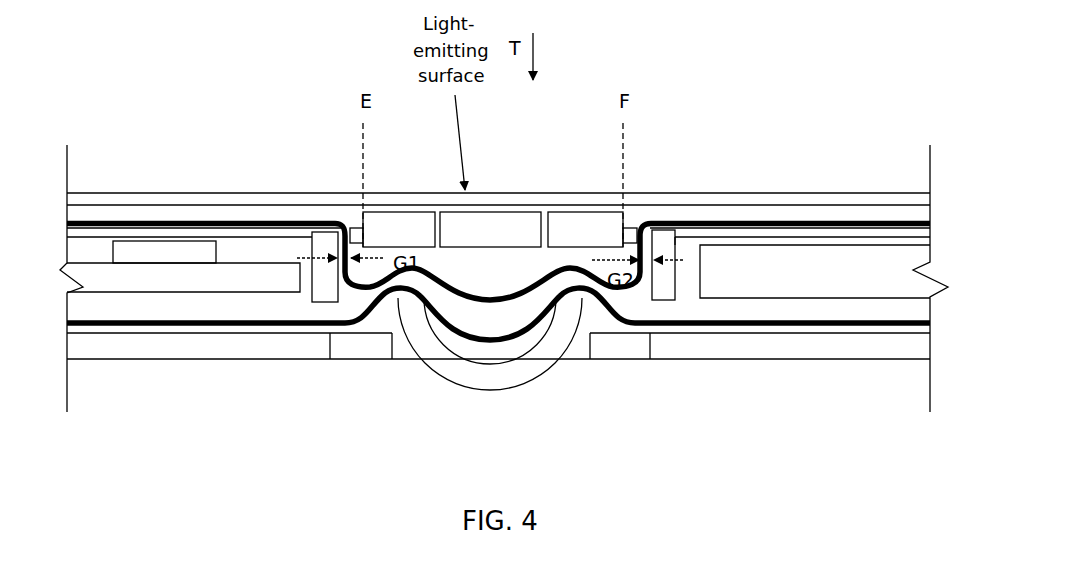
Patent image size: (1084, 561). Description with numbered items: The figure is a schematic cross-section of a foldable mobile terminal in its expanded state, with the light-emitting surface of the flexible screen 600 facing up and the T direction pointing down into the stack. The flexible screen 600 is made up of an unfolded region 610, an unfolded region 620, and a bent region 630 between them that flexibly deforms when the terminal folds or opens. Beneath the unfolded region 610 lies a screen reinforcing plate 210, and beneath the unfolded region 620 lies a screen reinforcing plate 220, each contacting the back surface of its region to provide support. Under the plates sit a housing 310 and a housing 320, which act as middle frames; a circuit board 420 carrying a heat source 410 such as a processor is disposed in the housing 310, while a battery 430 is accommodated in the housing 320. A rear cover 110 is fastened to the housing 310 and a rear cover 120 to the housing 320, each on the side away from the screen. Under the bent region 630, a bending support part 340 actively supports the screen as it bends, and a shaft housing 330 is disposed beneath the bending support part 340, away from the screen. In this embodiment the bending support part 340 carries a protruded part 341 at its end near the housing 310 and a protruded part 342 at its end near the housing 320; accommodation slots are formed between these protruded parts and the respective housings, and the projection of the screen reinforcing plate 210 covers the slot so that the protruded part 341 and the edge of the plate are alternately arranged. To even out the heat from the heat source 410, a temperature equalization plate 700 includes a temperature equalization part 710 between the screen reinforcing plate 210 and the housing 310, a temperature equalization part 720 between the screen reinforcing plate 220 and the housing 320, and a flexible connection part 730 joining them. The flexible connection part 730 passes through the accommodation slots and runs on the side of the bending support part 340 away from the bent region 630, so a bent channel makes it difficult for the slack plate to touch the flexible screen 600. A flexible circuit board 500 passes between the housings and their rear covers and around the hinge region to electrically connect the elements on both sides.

The rear cover 110 is at (113, 352).
The rear cover 120 is at (890, 352).
The screen reinforcing plate 210 is at (172, 215).
The screen reinforcing plate 220 is at (813, 215).
The housing 310 is at (88, 233).
The housing 320 is at (895, 233).
The shaft housing 330 is at (478, 372).
The bending support part 340 is at (477, 233).
The protruded part 341 is at (352, 232).
The protruded part 342 is at (637, 232).
The heat source 410 is at (180, 248).
The circuit board 420 is at (250, 278).
The battery 430 is at (748, 285).
The flexible circuit board 500 is at (352, 329).
The flexible screen 600 is at (545, 191).
The unfolded region 610 is at (305, 198).
The unfolded region 620 is at (745, 198).
The bent region 630 is at (403, 197).
The temperature equalization plate 700 is at (492, 328).
The temperature equalization part 710 is at (250, 222).
The temperature equalization part 720 is at (717, 221).
The flexible connection part 730 is at (458, 295).